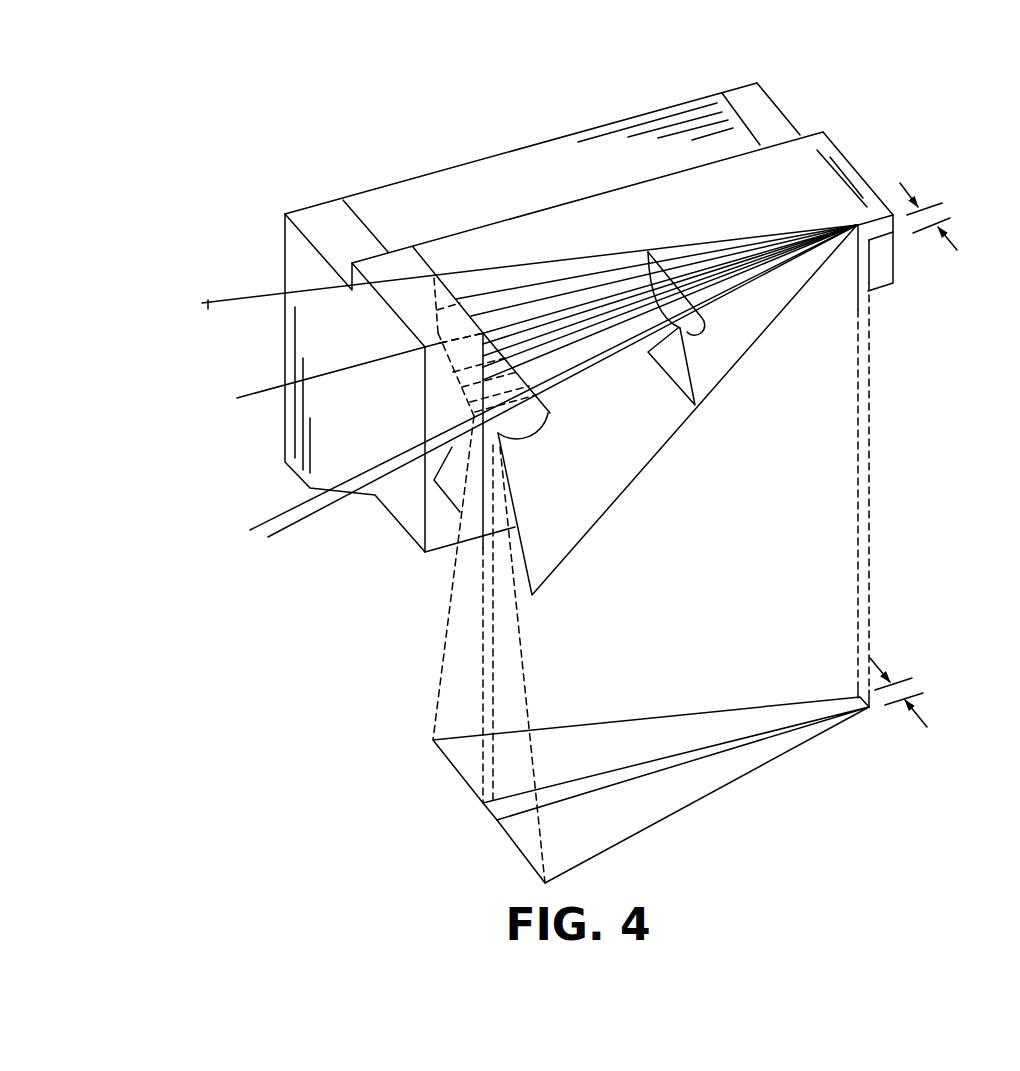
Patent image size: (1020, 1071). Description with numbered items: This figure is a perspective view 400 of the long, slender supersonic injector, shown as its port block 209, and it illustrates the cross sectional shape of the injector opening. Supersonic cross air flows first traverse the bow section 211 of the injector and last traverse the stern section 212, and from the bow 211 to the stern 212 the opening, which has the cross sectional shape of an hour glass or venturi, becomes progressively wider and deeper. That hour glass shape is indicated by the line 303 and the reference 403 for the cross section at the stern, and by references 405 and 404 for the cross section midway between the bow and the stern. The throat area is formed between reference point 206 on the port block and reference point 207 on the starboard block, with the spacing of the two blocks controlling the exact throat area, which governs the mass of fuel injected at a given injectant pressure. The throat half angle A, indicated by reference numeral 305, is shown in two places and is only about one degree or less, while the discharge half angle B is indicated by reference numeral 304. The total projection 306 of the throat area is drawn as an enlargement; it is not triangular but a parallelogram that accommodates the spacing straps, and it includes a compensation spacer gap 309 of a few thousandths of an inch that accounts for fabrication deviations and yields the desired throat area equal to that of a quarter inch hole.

The perspective view 400 is at (438, 143).
The port block 209 is at (733, 185).
The stern section 212 is at (482, 252).
The bow section 211 is at (833, 217).
The hour glass cross section midway 405 is at (645, 273).
The compensation spacer gap 309 is at (953, 242).
The line of one half hour glass shape 303 is at (438, 330).
The discharge half angle B 304 is at (212, 307).
The throat reference on port block 206 is at (477, 412).
The hour glass cross section midway 404 is at (685, 365).
The throat half angle A 305 is at (665, 870).
The throat reference on starboard block 207 is at (497, 440).
The hour glass cross section at stern 403 is at (520, 542).
The throat area projection 306 is at (720, 758).